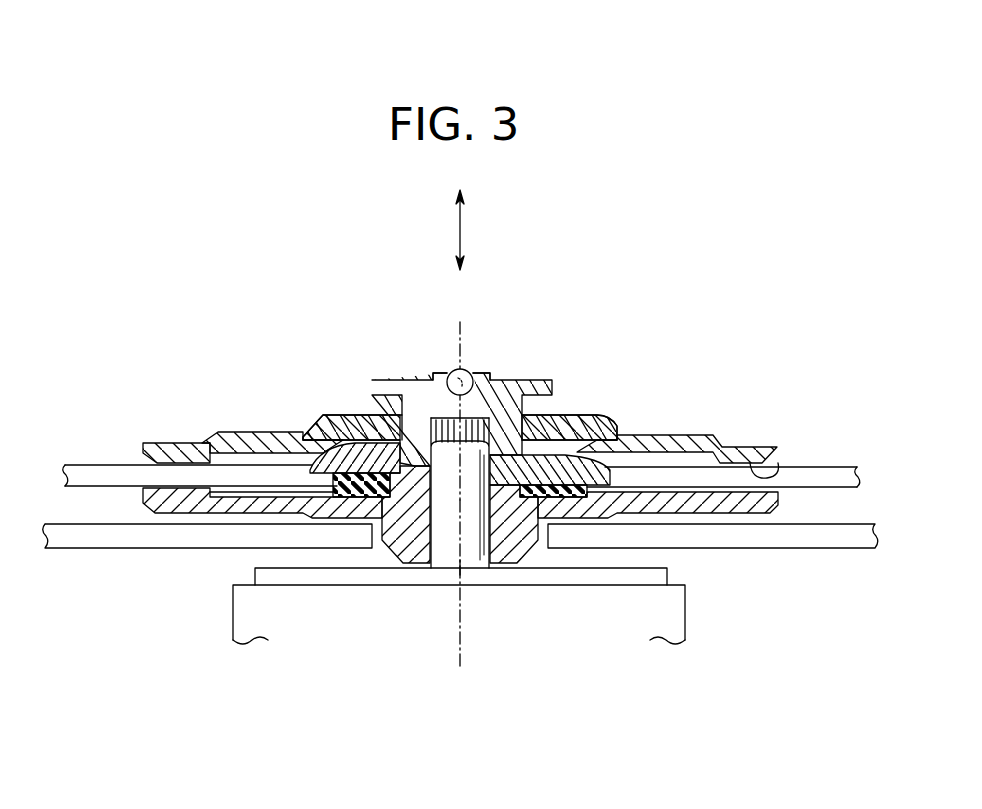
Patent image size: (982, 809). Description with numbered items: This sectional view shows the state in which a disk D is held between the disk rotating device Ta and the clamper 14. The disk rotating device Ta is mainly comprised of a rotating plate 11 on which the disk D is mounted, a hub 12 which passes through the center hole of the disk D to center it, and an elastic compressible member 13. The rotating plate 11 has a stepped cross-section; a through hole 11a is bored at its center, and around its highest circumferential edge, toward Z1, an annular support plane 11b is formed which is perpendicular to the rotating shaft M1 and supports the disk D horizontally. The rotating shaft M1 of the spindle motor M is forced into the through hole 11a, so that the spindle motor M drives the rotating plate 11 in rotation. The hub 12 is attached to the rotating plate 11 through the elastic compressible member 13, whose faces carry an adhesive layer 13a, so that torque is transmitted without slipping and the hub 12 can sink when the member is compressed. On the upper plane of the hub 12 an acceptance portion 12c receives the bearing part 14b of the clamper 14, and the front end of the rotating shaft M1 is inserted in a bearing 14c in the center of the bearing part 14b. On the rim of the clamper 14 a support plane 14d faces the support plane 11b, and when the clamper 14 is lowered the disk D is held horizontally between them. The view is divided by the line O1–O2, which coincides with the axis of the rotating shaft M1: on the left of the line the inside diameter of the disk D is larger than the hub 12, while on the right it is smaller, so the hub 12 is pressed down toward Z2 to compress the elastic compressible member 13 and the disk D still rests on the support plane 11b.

The rotating plate 11 is at (772, 503).
The through hole 11a is at (484, 567).
The support plane 11b is at (186, 452).
The hub 12 is at (580, 438).
The acceptance portion 12c is at (490, 450).
The elastic compressible member 13 is at (340, 492).
The adhesive layer 13a is at (383, 497).
The clamper 14 is at (688, 438).
The clamp member inner flange 14a is at (513, 450).
The bearing part 14b is at (380, 428).
The bearing 14c is at (421, 430).
The support plane 14d is at (778, 472).
The disk D is at (80, 476).
The disk rotating device Ta is at (384, 553).
The spindle motor M is at (667, 620).
The rotating shaft M1 is at (470, 562).
The line end point O1 is at (459, 400).
The line end point O2 is at (460, 600).
The upward direction Z1 is at (478, 222).
The downward direction Z2 is at (478, 266).